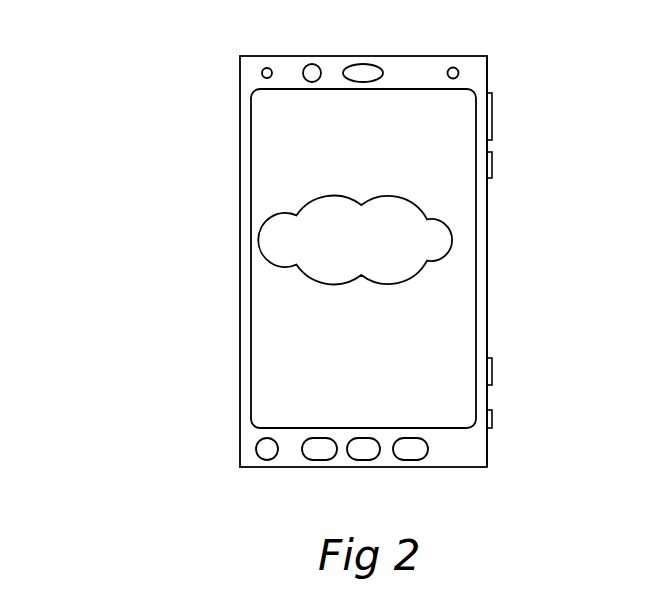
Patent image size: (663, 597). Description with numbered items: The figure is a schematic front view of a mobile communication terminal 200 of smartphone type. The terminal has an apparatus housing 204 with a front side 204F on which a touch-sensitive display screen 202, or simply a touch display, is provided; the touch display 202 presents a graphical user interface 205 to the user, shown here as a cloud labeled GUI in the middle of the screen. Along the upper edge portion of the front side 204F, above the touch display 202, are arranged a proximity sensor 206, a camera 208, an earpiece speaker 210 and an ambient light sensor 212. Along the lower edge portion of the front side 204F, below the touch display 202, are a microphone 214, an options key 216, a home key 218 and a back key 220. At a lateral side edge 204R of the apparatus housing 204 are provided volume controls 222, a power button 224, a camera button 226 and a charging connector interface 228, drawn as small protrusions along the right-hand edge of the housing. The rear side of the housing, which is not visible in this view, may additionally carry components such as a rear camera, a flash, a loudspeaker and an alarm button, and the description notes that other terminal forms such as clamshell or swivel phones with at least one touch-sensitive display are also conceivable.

The mobile communication terminal 200 is at (135, 38).
The touch-sensitive display screen 202 is at (251, 153).
The apparatus housing 204 is at (377, 261).
The front side 204F is at (250, 83).
The lateral side edge 204R is at (488, 75).
The graphical user interface 205 is at (348, 236).
The proximity sensor 206 is at (268, 68).
The camera 208 is at (312, 70).
The earpiece speaker 210 is at (364, 74).
The ambient light sensor 212 is at (454, 67).
The microphone 214 is at (266, 450).
The options key 216 is at (318, 450).
The home key 218 is at (363, 450).
The back key 220 is at (410, 450).
The volume controls 222 is at (492, 118).
The power button 224 is at (492, 160).
The camera button 226 is at (492, 368).
The charging connector interface 228 is at (492, 418).